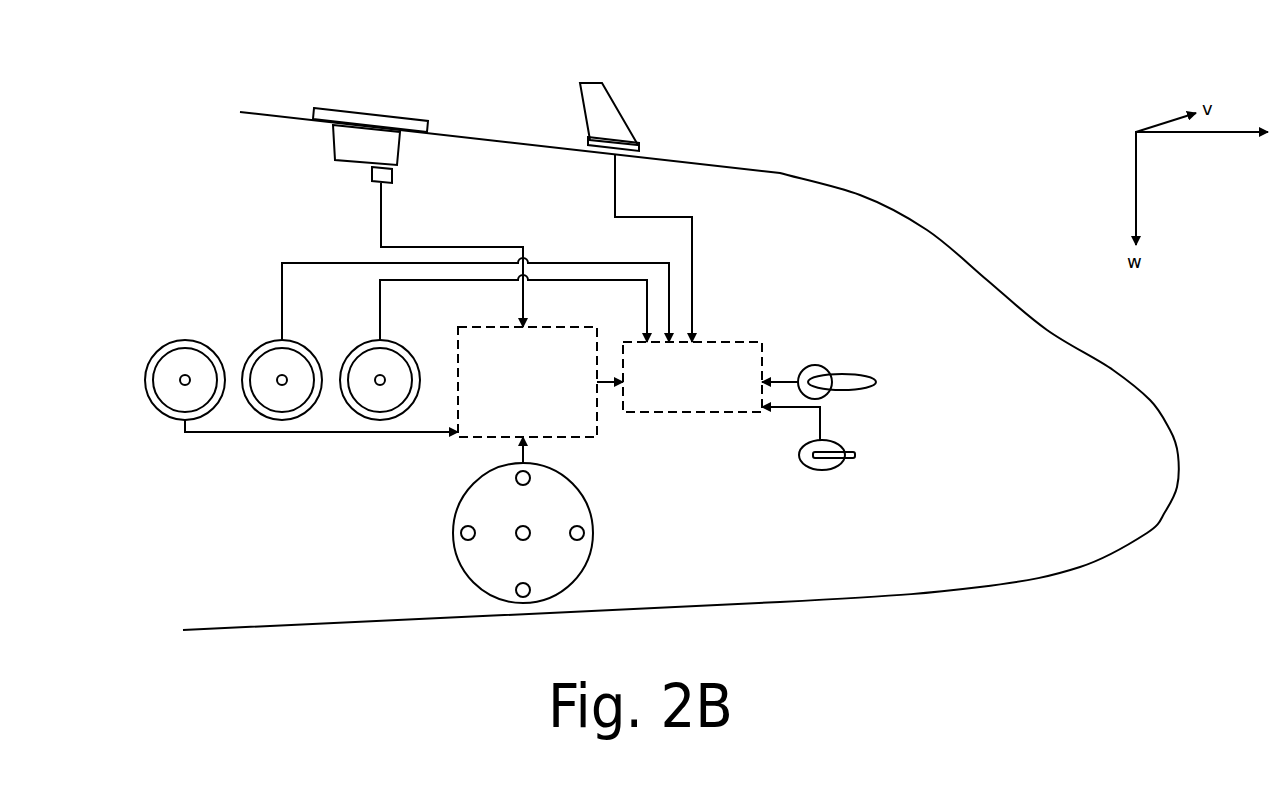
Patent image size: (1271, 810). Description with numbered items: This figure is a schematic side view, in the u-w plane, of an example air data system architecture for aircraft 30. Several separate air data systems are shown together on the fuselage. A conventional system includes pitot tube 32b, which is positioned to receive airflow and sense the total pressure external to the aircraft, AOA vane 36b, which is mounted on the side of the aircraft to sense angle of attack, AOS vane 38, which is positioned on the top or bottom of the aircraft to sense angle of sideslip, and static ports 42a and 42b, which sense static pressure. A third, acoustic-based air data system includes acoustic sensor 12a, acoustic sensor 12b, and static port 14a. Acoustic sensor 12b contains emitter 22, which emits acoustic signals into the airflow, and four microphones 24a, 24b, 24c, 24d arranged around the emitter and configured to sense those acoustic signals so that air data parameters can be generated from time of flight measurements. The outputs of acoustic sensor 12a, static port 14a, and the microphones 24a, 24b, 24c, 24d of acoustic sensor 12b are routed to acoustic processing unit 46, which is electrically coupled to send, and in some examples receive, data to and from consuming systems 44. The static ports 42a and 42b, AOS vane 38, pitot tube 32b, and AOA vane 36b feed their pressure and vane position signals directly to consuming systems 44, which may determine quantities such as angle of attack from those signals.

The acoustic sensor 12a is at (368, 110).
The acoustic sensor 12b is at (465, 577).
The static port 14a is at (170, 343).
The emitter 22 is at (530, 533).
The microphone 24a is at (516, 478).
The microphone 24b is at (581, 528).
The microphone 24c is at (530, 587).
The microphone 24d is at (461, 533).
The aircraft 30 is at (780, 173).
The pitot tube 32b is at (850, 373).
The AOA vane 36b is at (827, 472).
The AOS vane 38 is at (627, 118).
The static port 42a is at (303, 345).
The static port 42b is at (408, 350).
The consuming systems 44 is at (740, 342).
The acoustic processing unit 46 is at (567, 327).